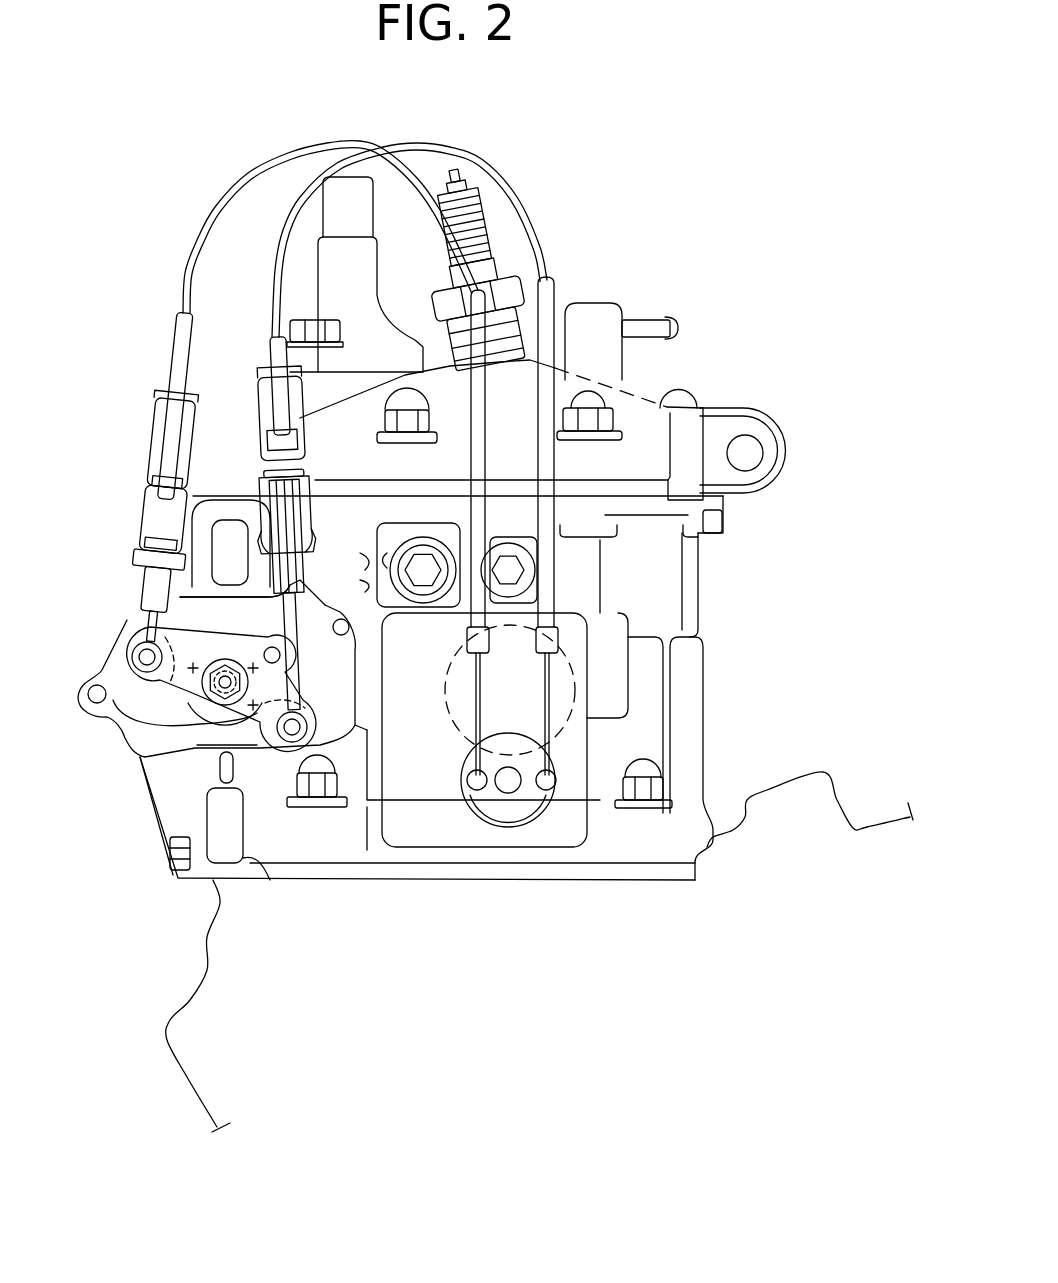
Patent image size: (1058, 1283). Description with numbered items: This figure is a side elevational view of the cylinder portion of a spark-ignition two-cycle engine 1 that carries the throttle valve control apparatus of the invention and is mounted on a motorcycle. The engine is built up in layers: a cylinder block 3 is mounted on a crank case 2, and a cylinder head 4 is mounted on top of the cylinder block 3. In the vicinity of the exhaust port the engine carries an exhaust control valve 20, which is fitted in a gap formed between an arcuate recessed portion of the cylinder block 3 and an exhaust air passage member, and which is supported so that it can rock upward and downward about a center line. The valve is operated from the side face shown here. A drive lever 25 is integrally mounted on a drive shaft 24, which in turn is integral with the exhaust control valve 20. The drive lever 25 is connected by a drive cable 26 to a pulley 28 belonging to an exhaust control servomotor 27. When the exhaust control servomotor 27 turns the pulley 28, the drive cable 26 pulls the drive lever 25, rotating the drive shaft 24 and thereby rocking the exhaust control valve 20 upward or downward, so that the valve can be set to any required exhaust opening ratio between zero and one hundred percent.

The two-cycle engine 1 is at (727, 358).
The crank case 2 is at (768, 790).
The cylinder block 3 is at (700, 600).
The cylinder head 4 is at (640, 453).
The exhaust control valve 20 is at (134, 764).
The drive shaft 24 is at (227, 688).
The drive lever 25 is at (187, 680).
The drive cable 26 is at (140, 622).
The exhaust control servomotor 27 is at (573, 737).
The pulley 28 is at (537, 810).